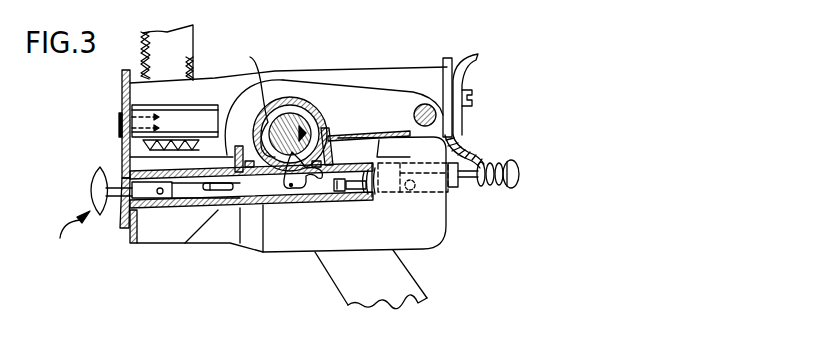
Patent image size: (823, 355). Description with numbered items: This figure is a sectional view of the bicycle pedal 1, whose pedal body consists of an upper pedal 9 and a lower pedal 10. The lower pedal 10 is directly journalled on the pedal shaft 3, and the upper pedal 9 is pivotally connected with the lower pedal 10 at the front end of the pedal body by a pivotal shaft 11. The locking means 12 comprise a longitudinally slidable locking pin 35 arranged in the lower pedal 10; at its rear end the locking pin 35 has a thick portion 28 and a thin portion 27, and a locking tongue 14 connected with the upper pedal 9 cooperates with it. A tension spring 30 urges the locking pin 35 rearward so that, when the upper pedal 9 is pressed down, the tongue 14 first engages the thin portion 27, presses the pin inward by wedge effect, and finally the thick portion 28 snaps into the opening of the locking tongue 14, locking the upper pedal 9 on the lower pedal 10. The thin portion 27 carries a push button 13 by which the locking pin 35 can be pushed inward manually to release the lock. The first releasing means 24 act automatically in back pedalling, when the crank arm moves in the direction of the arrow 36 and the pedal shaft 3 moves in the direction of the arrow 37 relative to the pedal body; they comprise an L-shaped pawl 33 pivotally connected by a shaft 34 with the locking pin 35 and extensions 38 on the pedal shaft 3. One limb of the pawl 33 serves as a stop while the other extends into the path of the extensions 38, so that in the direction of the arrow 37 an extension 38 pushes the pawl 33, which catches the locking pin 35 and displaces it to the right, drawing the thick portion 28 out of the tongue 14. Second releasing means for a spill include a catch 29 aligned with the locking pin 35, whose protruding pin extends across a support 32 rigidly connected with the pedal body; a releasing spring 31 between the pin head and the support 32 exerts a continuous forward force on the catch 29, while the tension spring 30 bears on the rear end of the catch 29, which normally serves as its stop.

The bicycle pedal 1 is at (480, 244).
The pedal shaft 3 is at (291, 122).
The upper pedal 9 is at (138, 89).
The lower pedal 10 is at (173, 233).
The pivotal shaft 11 is at (421, 103).
The locking means 12 is at (70, 223).
The push button 13 is at (96, 183).
The locking tongue 14 is at (122, 232).
The first releasing means 24 is at (353, 135).
The thin portion 27 is at (121, 172).
The thick portion 28 is at (143, 190).
The catch 29 is at (383, 183).
The tension spring 30 is at (367, 198).
The releasing spring 31 is at (486, 186).
The support 32 is at (465, 150).
The pawl 33 is at (313, 188).
The shaft 34 is at (297, 188).
The locking pin 35 is at (239, 218).
The arrow 36 is at (367, 262).
The arrow 37 is at (332, 132).
The extensions 38 is at (264, 108).